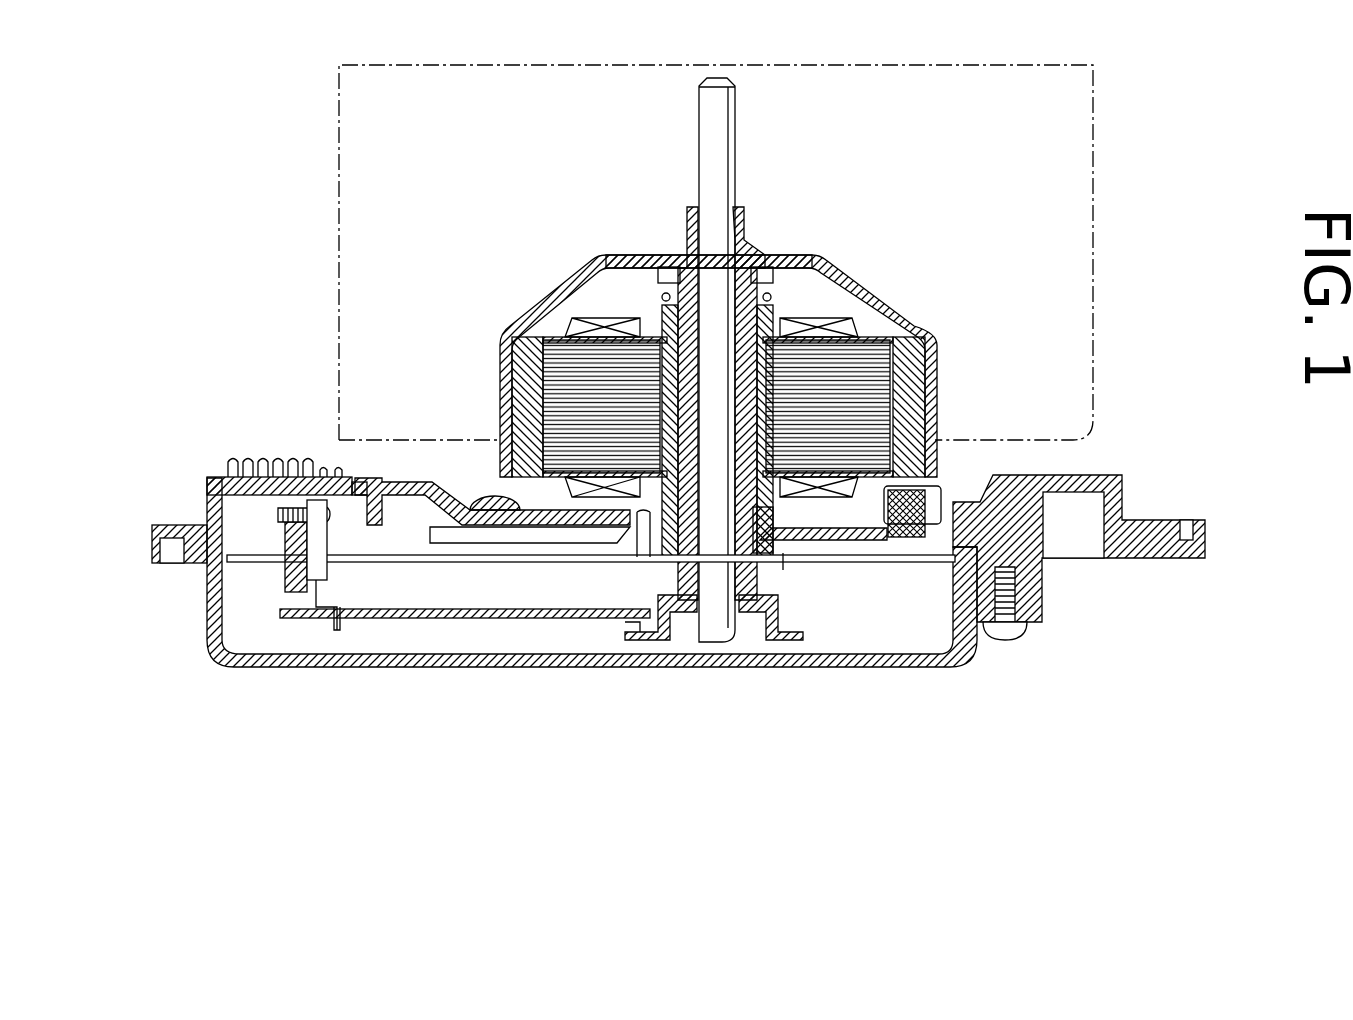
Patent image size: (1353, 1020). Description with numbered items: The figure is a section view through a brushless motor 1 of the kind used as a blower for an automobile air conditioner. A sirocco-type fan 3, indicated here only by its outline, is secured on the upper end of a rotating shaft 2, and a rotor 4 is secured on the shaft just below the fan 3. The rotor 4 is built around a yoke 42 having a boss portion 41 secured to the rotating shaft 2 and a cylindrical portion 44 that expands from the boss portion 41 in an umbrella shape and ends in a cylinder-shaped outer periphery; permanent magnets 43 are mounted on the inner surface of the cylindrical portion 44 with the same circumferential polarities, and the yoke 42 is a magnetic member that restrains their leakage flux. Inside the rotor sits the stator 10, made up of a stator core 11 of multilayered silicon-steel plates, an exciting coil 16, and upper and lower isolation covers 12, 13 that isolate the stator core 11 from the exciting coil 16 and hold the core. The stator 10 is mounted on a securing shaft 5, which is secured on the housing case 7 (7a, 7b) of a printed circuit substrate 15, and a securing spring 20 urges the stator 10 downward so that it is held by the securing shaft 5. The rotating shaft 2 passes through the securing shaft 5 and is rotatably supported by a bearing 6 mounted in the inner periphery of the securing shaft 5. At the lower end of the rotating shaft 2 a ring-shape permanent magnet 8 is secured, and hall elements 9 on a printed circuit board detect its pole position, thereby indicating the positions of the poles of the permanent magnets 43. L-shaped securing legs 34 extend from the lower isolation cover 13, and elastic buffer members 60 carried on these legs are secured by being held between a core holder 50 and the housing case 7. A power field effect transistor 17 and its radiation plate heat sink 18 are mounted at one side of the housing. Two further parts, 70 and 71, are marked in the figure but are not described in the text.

The brushless motor 1 is at (1133, 266).
The rotating shaft 2 is at (717, 632).
The sirocco-type fan 3 is at (915, 62).
The rotor 4 is at (743, 366).
The securing shaft 5 is at (790, 545).
The bearing 6 is at (625, 258).
The housing case 7 is at (678, 578).
The housing case portion 7a is at (1085, 492).
The housing case portion 7b is at (965, 660).
The ring-shape permanent magnet 8 is at (645, 642).
The hall elements 9 is at (630, 625).
The stator 10 is at (551, 496).
The stator core 11 is at (556, 386).
The upper isolation cover 12 is at (773, 312).
The lower isolation cover 13 is at (598, 512).
The printed circuit substrate 15 is at (428, 620).
The exciting coil 16 is at (610, 325).
The power field effect transistor 17 is at (313, 600).
The radiation plate heat sink 18 is at (300, 477).
The securing spring 20 is at (790, 300).
The securing legs 34 is at (936, 562).
The boss portion 41 is at (745, 225).
The yoke 42 is at (925, 330).
The permanent magnets 43 is at (527, 342).
The cylindrical portion 44 is at (518, 405).
The core holder 50 is at (932, 488).
The buffer members 60 is at (928, 446).
The wire clip 70 is at (645, 558).
The lead 71 is at (790, 572).